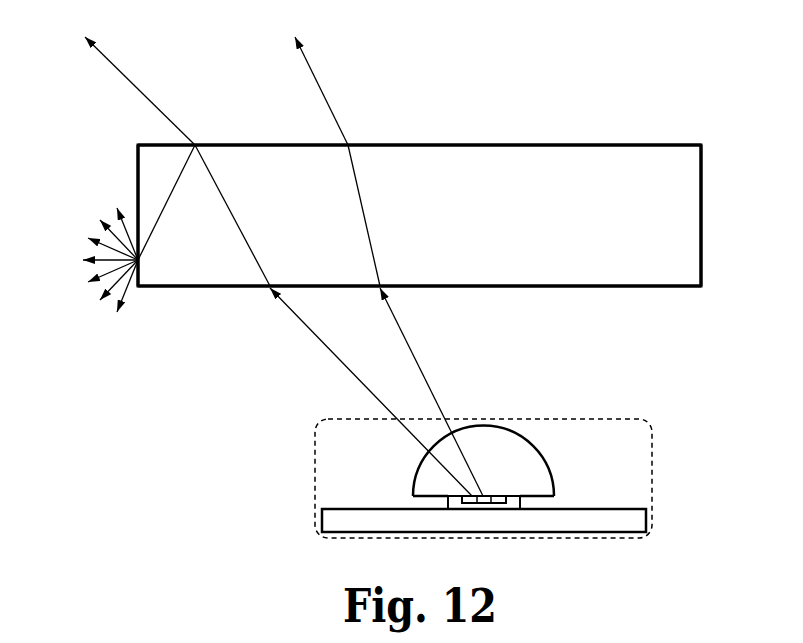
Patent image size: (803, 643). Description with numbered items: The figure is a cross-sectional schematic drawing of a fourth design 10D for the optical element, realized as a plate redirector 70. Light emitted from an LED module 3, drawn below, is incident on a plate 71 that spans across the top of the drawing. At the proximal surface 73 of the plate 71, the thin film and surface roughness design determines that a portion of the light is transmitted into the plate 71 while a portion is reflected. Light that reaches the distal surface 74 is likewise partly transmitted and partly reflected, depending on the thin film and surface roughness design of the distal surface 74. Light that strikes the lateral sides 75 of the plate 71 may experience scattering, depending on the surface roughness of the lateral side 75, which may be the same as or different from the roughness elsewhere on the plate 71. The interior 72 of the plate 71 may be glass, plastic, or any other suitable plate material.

The fourth design 10D is at (75, 108).
The plate redirector 70 is at (722, 128).
The plate 71 is at (623, 178).
The interior 72 is at (575, 178).
The proximal surface 73 is at (560, 288).
The distal surface 74 is at (448, 143).
The lateral sides 75 is at (138, 183).
The LED module 3 is at (315, 453).